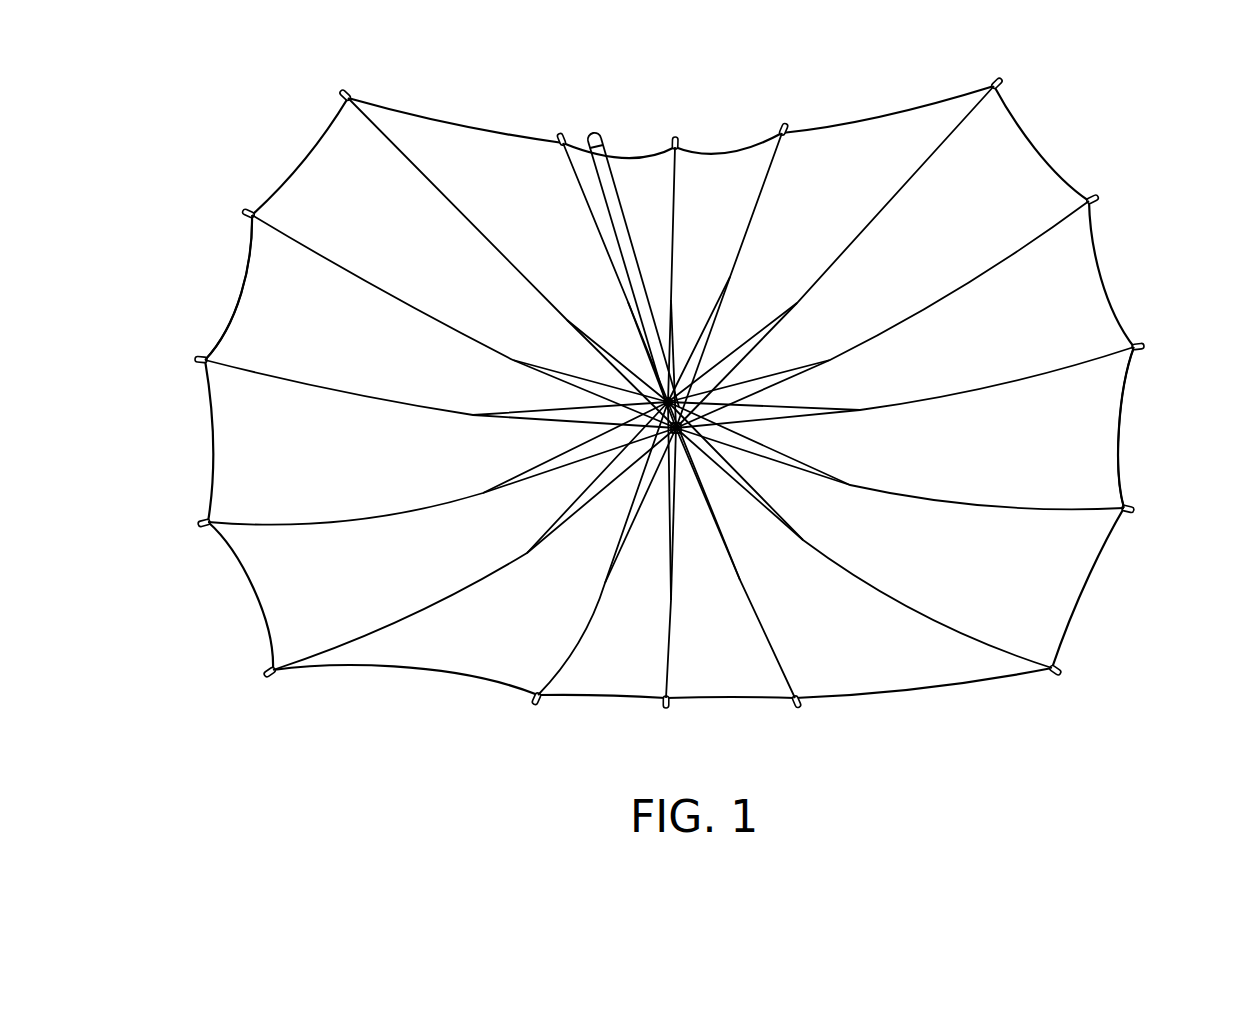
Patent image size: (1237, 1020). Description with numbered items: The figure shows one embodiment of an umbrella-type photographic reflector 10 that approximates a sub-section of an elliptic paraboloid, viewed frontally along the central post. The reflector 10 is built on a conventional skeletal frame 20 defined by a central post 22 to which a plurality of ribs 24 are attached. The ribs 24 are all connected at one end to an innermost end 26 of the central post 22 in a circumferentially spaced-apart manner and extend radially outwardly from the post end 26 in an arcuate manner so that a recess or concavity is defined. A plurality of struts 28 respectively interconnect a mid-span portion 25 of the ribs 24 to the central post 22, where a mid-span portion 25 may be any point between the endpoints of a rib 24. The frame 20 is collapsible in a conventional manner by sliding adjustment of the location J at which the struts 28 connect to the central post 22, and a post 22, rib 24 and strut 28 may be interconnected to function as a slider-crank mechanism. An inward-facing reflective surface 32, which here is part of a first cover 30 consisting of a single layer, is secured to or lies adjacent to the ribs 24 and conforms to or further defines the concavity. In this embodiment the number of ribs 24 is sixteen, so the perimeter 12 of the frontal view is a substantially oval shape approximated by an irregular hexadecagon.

The photographic reflector 10 is at (709, 407).
The perimeter 12 is at (1122, 537).
The frame 20 is at (669, 392).
The central post 22 is at (586, 106).
The ribs 24 is at (973, 635).
The mid-span portion 25 is at (476, 489).
The innermost end 26 is at (695, 453).
The struts 28 is at (567, 320).
The first cover 30 is at (313, 344).
The reflective surface 32 is at (1016, 449).
The location J is at (682, 366).